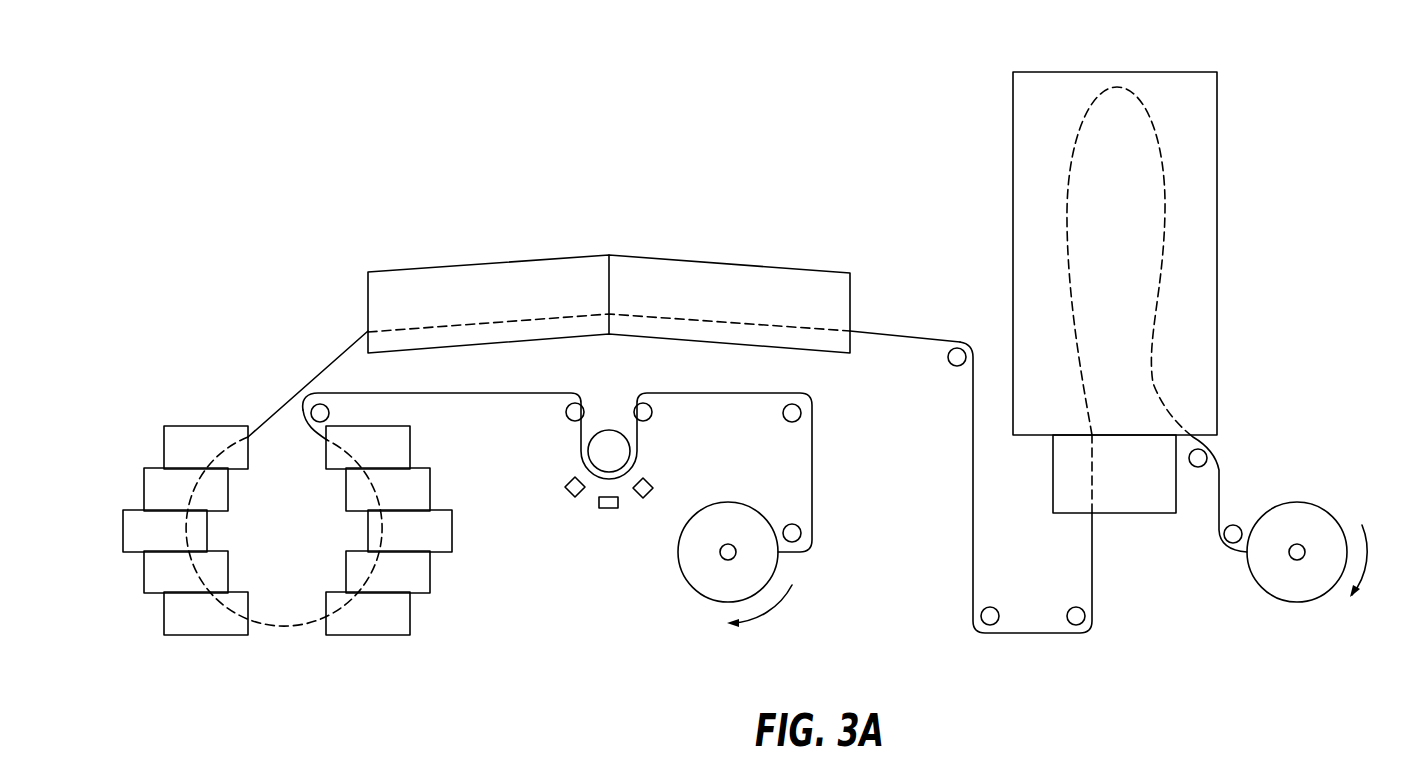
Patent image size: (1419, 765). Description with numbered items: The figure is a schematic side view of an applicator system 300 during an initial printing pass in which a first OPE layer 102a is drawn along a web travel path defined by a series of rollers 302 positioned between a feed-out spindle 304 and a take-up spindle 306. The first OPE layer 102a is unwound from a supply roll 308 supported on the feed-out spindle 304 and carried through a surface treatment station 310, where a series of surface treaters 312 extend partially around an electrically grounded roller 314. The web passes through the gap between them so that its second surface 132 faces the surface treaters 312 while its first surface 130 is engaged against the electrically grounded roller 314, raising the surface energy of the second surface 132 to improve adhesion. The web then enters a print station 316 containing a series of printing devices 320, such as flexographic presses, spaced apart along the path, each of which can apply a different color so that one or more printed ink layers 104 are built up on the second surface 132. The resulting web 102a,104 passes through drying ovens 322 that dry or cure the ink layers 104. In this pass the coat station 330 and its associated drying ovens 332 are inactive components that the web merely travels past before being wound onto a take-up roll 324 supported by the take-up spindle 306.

The applicator system 300 is at (268, 92).
The rollers 302 is at (313, 406).
The feed-out spindle 304 is at (723, 560).
The take-up spindle 306 is at (1303, 560).
The supply roll 308 is at (687, 580).
The surface treatment station 310 is at (660, 460).
The surface treaters 312 is at (642, 500).
The electrically grounded roller 314 is at (618, 430).
The print station 316 is at (85, 445).
The printing devices 320 is at (164, 613).
The drying ovens 322 is at (655, 258).
The take-up roll 324 is at (1290, 602).
The coat station 330 is at (1145, 515).
The drying ovens 332 is at (1217, 133).
The first surface 130 is at (540, 388).
The second surface 132 is at (575, 452).
The printed ink layers 104 is at (335, 352).
The first OPE layer 102a is at (765, 327).
The web comprising first OPE layer and ink layers 102a,104 is at (1090, 103).